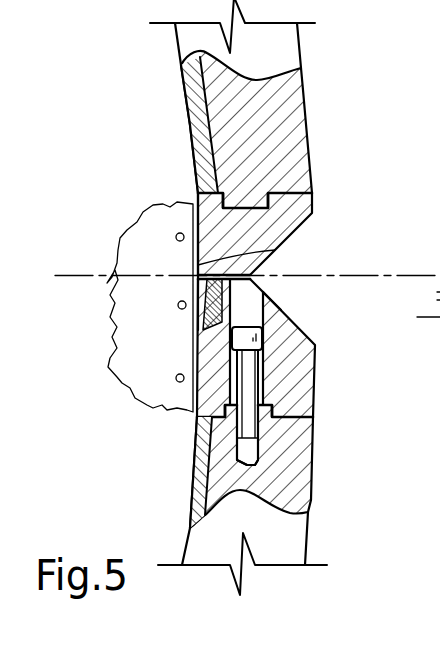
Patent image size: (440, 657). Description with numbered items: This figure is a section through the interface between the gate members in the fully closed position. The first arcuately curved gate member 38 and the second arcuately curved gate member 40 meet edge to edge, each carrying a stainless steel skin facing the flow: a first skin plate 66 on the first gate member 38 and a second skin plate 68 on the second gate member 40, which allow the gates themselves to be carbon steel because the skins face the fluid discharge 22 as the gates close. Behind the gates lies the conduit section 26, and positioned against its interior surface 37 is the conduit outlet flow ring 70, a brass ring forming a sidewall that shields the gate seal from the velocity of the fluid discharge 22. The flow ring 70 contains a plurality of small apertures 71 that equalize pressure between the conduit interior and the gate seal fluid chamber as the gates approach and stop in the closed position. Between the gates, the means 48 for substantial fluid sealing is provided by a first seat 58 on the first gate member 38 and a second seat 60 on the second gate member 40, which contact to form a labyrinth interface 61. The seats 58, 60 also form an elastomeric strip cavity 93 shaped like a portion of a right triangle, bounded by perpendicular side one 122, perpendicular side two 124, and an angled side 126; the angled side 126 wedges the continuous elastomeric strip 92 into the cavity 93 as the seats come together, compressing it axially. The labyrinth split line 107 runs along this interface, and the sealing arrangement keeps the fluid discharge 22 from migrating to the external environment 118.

The fluid discharge 22 is at (59, 355).
The conduit section 26 is at (118, 250).
The conduit interior surface 37 is at (113, 302).
The first arcuately curved gate member 38 is at (303, 90).
The second arcuately curved gate member 40 is at (311, 468).
The means for substantial fluid sealing 48 is at (197, 345).
The first seat 58 is at (312, 209).
The second seat 60 is at (313, 338).
The labyrinth interface 61 is at (252, 280).
The first stainless steel skin plate 66 is at (190, 125).
The second stainless steel skin plate 68 is at (192, 480).
The conduit outlet flow ring 70 is at (181, 418).
The apertures 71 is at (179, 233).
The elastomeric strip 92 is at (198, 318).
The elastomeric strip cavity 93 is at (198, 265).
The labyrinth split line 107 is at (176, 378).
The external environment 118 is at (366, 160).
The right triangle portion perpendicular side one 122 is at (275, 250).
The right triangle portion perpendicular side two 124 is at (200, 287).
The right triangle portion angled side 126 is at (281, 310).